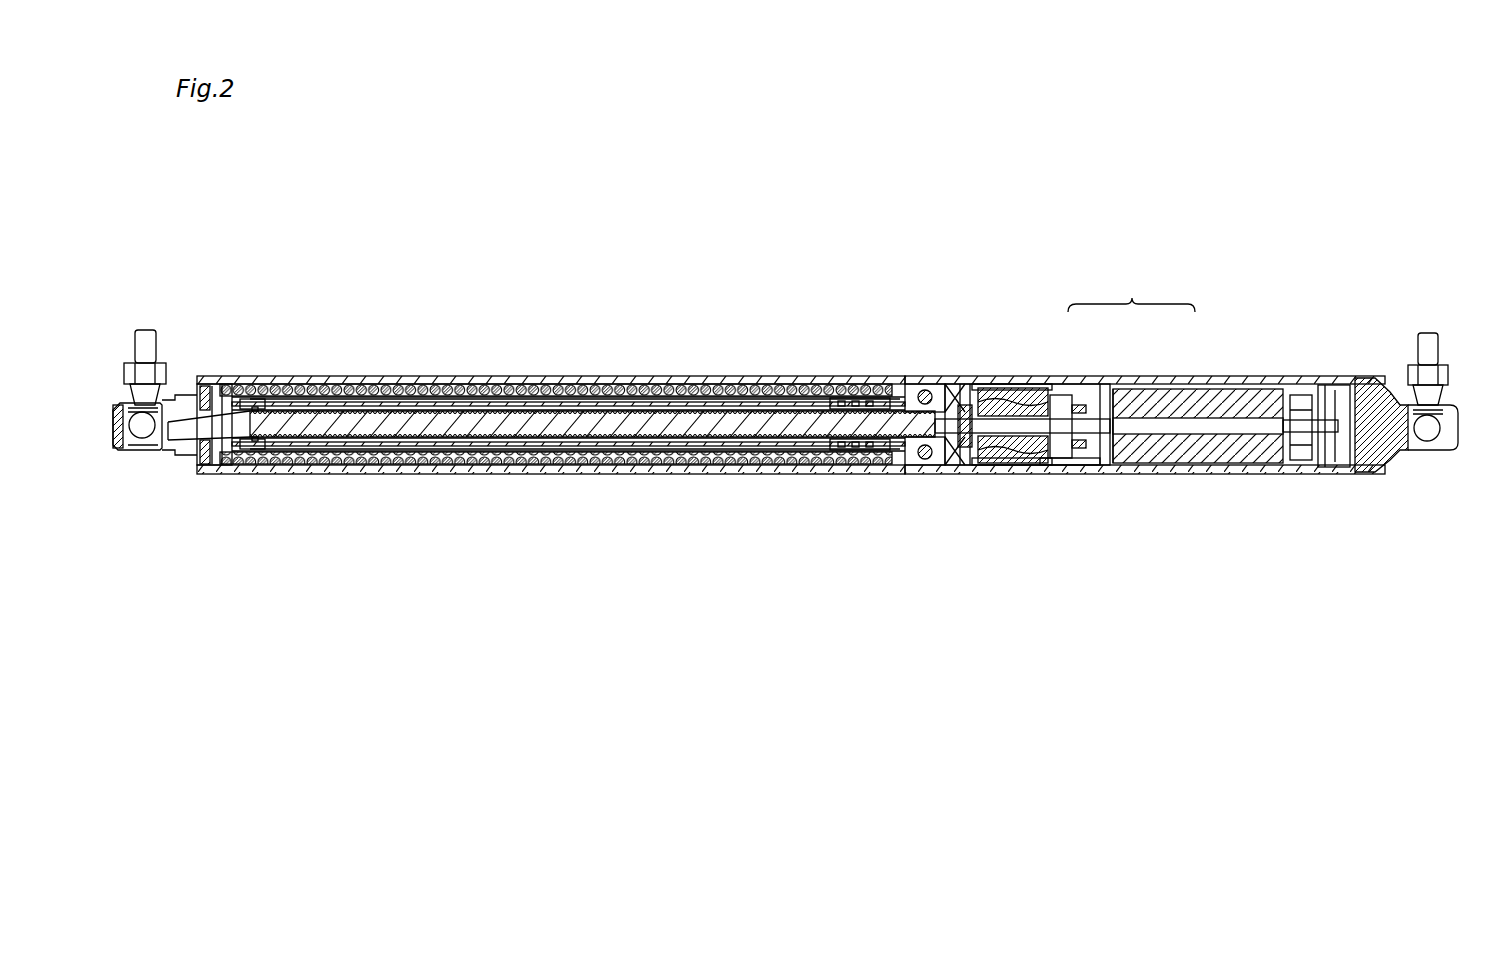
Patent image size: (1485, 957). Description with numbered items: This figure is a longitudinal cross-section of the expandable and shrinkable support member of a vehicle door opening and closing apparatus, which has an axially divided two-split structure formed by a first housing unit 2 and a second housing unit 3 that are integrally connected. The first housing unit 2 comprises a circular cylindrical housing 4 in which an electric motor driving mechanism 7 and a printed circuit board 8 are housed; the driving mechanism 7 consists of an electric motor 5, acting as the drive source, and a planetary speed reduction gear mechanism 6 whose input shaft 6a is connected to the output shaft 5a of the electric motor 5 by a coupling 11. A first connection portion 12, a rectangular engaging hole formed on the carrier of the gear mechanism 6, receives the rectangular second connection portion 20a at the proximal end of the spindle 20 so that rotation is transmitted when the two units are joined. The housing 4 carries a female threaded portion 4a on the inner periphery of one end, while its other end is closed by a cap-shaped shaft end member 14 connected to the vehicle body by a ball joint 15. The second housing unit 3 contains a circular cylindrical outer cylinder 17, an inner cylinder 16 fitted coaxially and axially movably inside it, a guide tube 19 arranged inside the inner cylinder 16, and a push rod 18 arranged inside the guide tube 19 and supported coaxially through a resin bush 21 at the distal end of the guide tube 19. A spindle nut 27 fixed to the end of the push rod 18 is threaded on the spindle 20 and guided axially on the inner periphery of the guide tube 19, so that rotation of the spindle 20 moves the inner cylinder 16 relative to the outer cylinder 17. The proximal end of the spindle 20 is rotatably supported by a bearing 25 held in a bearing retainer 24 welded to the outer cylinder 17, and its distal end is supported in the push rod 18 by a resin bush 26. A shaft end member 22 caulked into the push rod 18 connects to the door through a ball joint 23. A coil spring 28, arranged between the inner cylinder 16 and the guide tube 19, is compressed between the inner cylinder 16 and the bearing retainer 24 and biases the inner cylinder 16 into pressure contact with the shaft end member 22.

The first housing unit 2 is at (1263, 366).
The second housing unit 3 is at (628, 338).
The housing 4 is at (1205, 474).
The female threaded portion 4a is at (962, 376).
The electric motor 5 is at (1175, 376).
The output shaft 5a is at (1257, 425).
The speed reduction gear mechanism 6 is at (1050, 376).
The input shaft 6a is at (1028, 465).
The electric motor driving mechanism 7 is at (1131, 291).
The printed circuit board 8 is at (1312, 465).
The coupling 11 is at (1068, 470).
The first connection portion 12 is at (983, 470).
The shaft end member 14 is at (1425, 452).
The ball joint 15 is at (1412, 345).
The inner cylinder 16 is at (393, 376).
The outer cylinder 17 is at (717, 376).
The push rod 18 is at (505, 404).
The guide tube 19 is at (453, 397).
The spindle 20 is at (571, 420).
The second connection portion 20a is at (990, 376).
The resin bush 21 is at (272, 440).
The shaft end member 22 is at (160, 450).
The ball joint 23 is at (155, 350).
The bearing retainer 24 is at (915, 376).
The bearing 25 is at (922, 470).
The resin bush 26 is at (255, 460).
The spindle nut 27 is at (855, 468).
The coil spring 28 is at (500, 468).